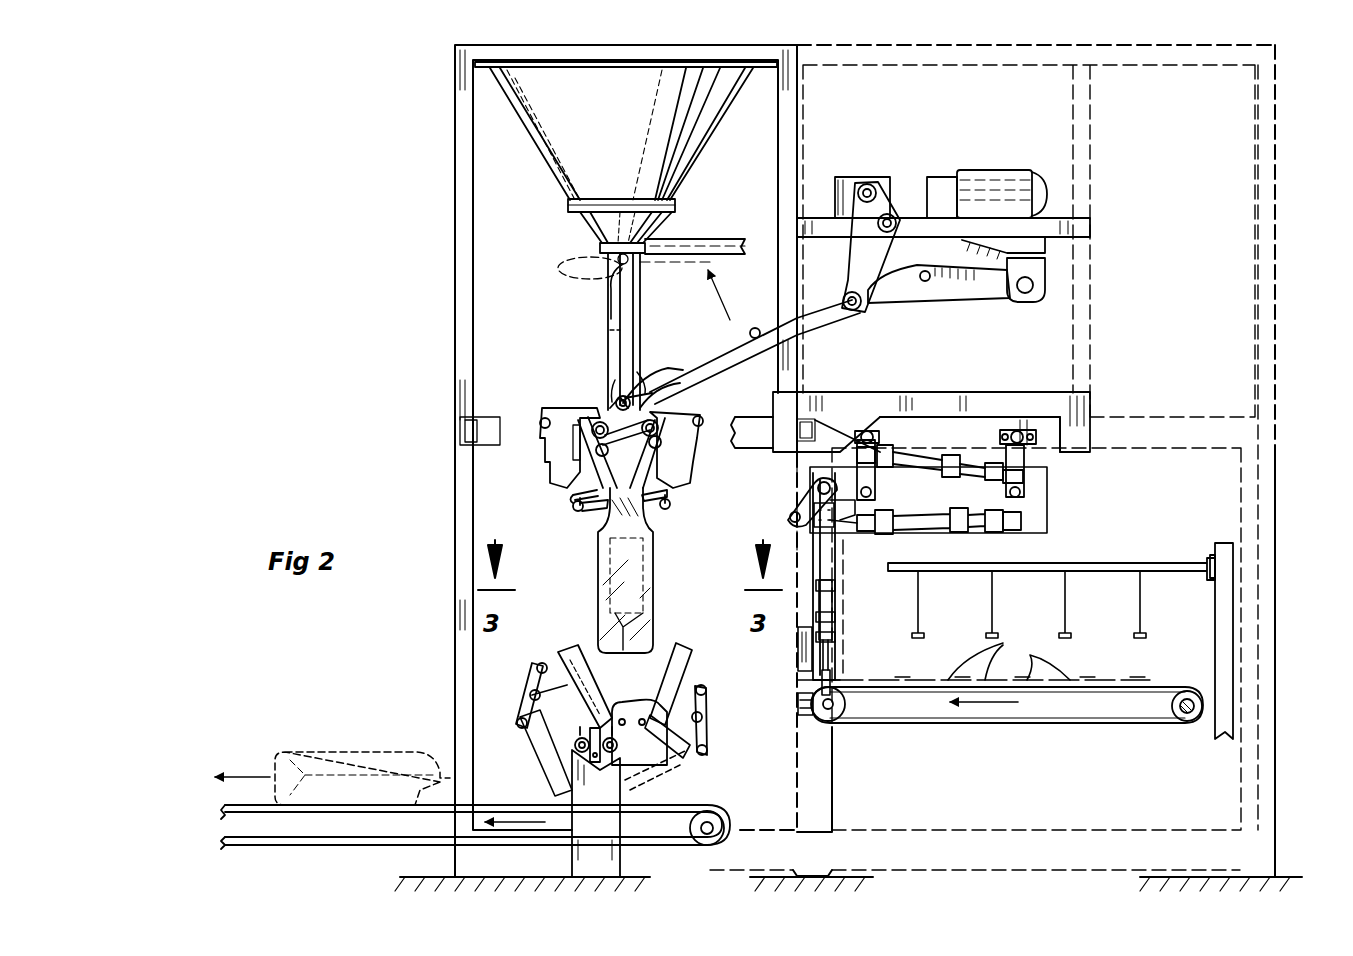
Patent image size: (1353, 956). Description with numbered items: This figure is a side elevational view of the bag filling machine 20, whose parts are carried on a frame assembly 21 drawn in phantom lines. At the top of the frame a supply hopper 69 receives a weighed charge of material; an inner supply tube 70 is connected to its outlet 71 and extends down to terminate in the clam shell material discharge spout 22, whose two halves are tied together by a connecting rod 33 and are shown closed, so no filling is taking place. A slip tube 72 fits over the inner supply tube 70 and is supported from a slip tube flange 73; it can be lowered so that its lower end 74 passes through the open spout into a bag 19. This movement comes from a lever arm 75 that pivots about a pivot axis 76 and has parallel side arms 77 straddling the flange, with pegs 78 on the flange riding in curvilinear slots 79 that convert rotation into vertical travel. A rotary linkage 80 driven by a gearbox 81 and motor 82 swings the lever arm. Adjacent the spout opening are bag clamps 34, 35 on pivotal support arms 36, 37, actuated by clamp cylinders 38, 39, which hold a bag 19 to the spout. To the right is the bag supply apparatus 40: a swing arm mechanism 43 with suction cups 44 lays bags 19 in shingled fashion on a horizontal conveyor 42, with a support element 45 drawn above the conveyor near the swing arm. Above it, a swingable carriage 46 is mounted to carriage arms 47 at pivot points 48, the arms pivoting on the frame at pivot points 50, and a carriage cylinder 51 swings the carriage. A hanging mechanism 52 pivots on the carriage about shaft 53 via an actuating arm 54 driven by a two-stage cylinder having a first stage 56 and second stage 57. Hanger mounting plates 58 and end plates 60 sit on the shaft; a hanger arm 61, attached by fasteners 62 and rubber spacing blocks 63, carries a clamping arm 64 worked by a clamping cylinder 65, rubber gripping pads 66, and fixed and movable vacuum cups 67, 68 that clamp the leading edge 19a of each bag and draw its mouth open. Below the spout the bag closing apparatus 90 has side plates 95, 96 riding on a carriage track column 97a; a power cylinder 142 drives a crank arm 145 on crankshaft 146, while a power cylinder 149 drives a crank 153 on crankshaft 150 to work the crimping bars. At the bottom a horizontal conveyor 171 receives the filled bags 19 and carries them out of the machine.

The bag 19 is at (600, 568).
The leading edge of bag 19a is at (612, 518).
The bag filling machine 20 is at (432, 100).
The frame assembly 21 is at (460, 182).
The material discharge spout 22 is at (648, 528).
The connecting rod 33 is at (655, 408).
The bag clamp 34 is at (605, 511).
The bag clamp 35 is at (660, 512).
The pivotal support arm 36 is at (575, 491).
The pivotal support arm 37 is at (697, 485).
The clamp cylinder 38 is at (545, 455).
The clamp cylinder 39 is at (700, 450).
The bag supply apparatus 40 is at (1198, 537).
The horizontal conveyor 42 is at (1090, 728).
The swing arm mechanism 43 is at (1235, 545).
The suction cups 44 is at (993, 638).
The support bar 45 is at (1175, 548).
The swingable carriage 46 is at (1053, 488).
The carriage arms 47 is at (880, 430).
The pivot points 48 is at (867, 432).
The pivot points 50 is at (872, 472).
The carriage cylinder 51 is at (908, 455).
The hanging mechanism 52 is at (790, 633).
The shaft 53 is at (816, 489).
The actuating arm 54 is at (850, 560).
The first stage 56 is at (935, 528).
The second stage 57 is at (988, 512).
The hanger mounting plates 58 is at (885, 525).
The end plates 60 is at (792, 510).
The hanger arm 61 is at (838, 580).
The fasteners 62 is at (812, 530).
The rubber spacing blocks 63 is at (830, 475).
The clamping arms 64 is at (845, 704).
The clamping cylinders 65 is at (835, 610).
The rubber gripping pads 66 is at (836, 680).
The fixed vacuum cups 67 is at (797, 655).
The movable vacuum cups 68 is at (798, 700).
The supply hopper 69 is at (530, 122).
The inner supply tube 70 is at (640, 315).
The outlet 71 is at (607, 250).
The slip tube 72 is at (640, 289).
The slip tube flange 73 is at (613, 402).
The lower end of slip tube 74 is at (655, 620).
The lever arm 75 is at (880, 305).
The pivot axis 76 is at (1028, 287).
The side arms 77 is at (688, 240).
The pegs 78 is at (618, 272).
The curvilinear slots 79 is at (588, 275).
The rotary linkage 80 is at (845, 270).
The gearbox 81 is at (905, 178).
The motor 82 is at (1012, 175).
The bag closing apparatus 90 is at (505, 690).
The side plate 95 is at (712, 812).
The side plate 96 is at (618, 704).
The carriage track column 97a is at (615, 855).
The power cylinder 142 is at (690, 775).
The crank arm 145 is at (702, 742).
The crankshaft 146 is at (680, 690).
The power cylinder 149 is at (558, 770).
The crankshaft 150 is at (535, 675).
The crank 153 is at (545, 755).
The horizontal conveyor 171 is at (318, 848).